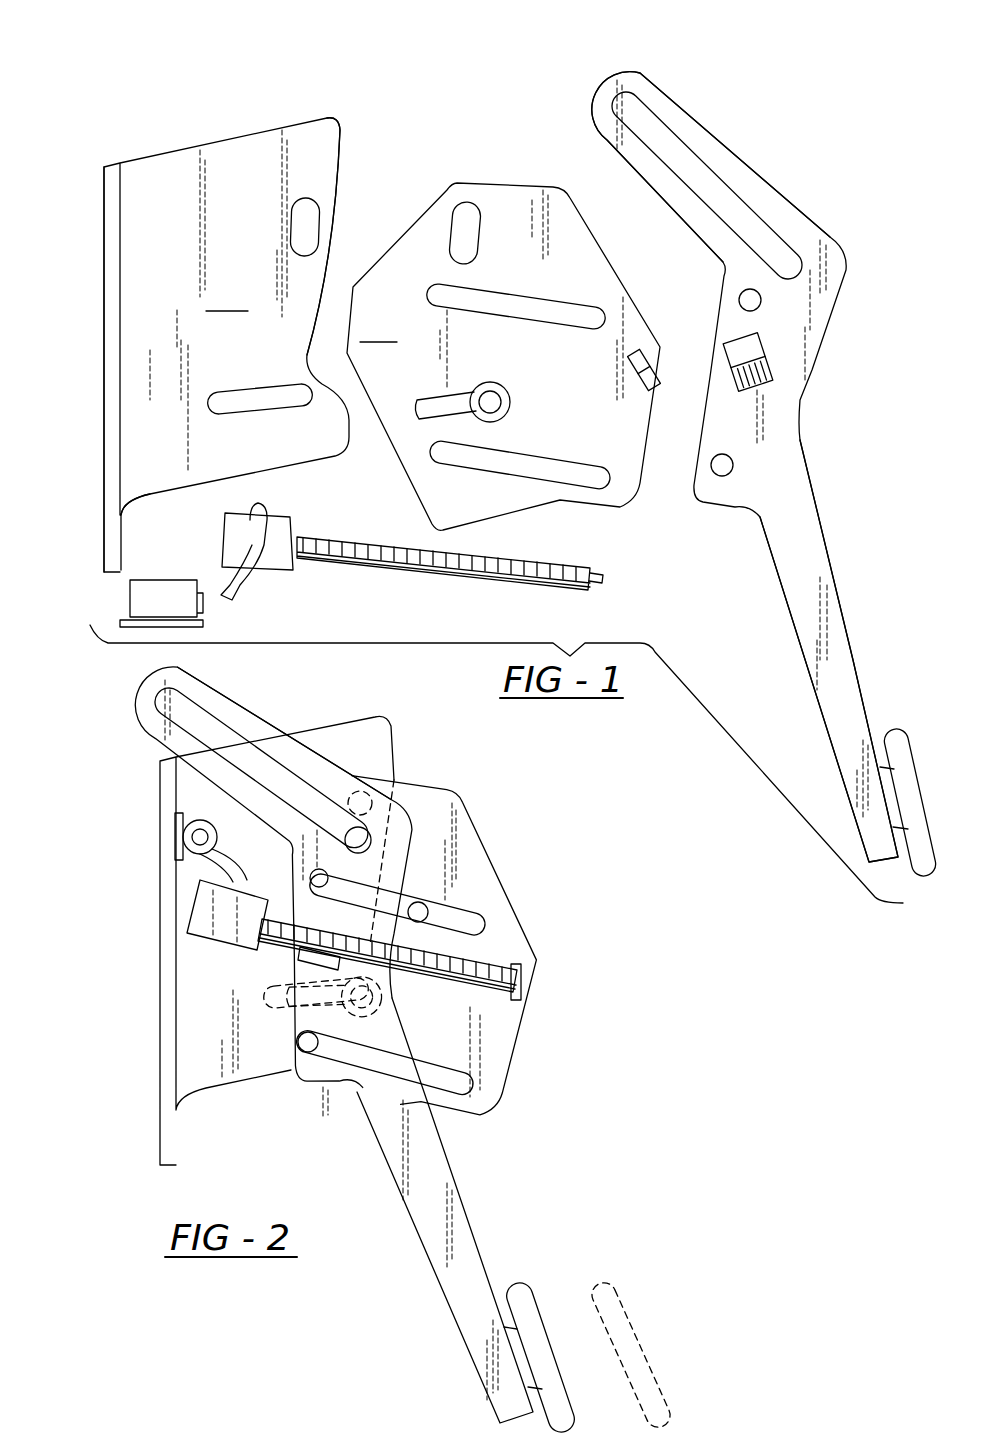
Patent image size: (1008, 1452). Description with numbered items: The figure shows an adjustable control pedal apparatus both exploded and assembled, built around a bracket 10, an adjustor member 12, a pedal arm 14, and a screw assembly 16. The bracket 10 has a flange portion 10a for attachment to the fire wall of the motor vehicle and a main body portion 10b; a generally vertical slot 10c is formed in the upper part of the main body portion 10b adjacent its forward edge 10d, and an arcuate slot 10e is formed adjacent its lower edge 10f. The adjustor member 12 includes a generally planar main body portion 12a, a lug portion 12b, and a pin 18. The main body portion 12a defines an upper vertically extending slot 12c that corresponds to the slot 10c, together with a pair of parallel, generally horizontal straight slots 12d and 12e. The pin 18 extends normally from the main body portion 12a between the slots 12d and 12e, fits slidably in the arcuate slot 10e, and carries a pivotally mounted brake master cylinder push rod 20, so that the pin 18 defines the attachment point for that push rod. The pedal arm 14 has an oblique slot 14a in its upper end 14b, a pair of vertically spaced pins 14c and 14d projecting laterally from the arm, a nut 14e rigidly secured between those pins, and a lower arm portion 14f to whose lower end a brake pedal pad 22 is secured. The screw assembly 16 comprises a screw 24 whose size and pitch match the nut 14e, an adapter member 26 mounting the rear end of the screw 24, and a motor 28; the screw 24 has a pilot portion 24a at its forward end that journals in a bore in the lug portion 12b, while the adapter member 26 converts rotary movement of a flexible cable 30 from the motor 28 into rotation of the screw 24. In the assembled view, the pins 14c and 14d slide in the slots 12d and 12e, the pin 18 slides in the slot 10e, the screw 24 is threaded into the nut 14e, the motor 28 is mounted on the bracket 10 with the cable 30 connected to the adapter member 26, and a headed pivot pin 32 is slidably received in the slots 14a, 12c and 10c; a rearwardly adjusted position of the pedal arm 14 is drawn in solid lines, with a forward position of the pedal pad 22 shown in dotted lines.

In FIG. 1, the bracket 10 is at (263, 316).
In FIG. 2, the bracket 10 is at (356, 708).
In FIG. 1, the flange portion 10a is at (122, 284).
In FIG. 1, the main body portion 10b is at (227, 298).
In FIG. 1, the generally vertical slot 10c is at (293, 200).
In FIG. 1, the forward edge 10d is at (348, 172).
In FIG. 1, the arcuate slot 10e is at (254, 392).
In FIG. 2, the arcuate slot 10e is at (283, 984).
In FIG. 1, the lower edge 10f is at (213, 487).
In FIG. 1, the adjustor member 12 is at (523, 307).
In FIG. 2, the adjustor member 12 is at (370, 922).
In FIG. 1, the main body portion 12a is at (381, 330).
In FIG. 1, the lug portion 12b is at (652, 362).
In FIG. 1, the upper generally vertically extending slot 12c is at (472, 232).
In FIG. 1, the straight slot 12d is at (538, 300).
In FIG. 2, the straight slot 12d is at (397, 904).
In FIG. 1, the straight slot 12e is at (520, 455).
In FIG. 2, the straight slot 12e is at (384, 1063).
In FIG. 1, the pedal arm 14 is at (830, 215).
In FIG. 2, the pedal arm 14 is at (340, 1028).
In FIG. 1, the oblique slot 14a is at (753, 212).
In FIG. 2, the oblique slot 14a is at (261, 768).
In FIG. 1, the upper end 14b is at (695, 112).
In FIG. 2, the upper end 14b is at (284, 733).
In FIG. 1, the pin 14c is at (762, 300).
In FIG. 2, the pin 14c is at (328, 885).
In FIG. 1, the pin 14d is at (712, 474).
In FIG. 2, the pin 14d is at (306, 1054).
In FIG. 1, the nut 14e is at (740, 387).
In FIG. 2, the nut 14e is at (305, 915).
In FIG. 1, the lower arm portion 14f is at (838, 590).
In FIG. 2, the lower arm portion 14f is at (478, 1257).
In FIG. 1, the screw assembly 16 is at (406, 538).
In FIG. 1, the pin 18 is at (512, 395).
In FIG. 2, the pin 18 is at (362, 997).
In FIG. 1, the brake master cylinder push rod 20 is at (438, 400).
In FIG. 2, the brake master cylinder push rod 20 is at (317, 995).
In FIG. 1, the brake pedal pad 22 is at (900, 756).
In FIG. 2, the brake pedal pad 22 is at (535, 1320).
In FIG. 1, the screw 24 is at (527, 563).
In FIG. 2, the screw 24 is at (517, 1000).
In FIG. 1, the pilot portion 24a is at (602, 575).
In FIG. 2, the pilot portion 24a is at (523, 988).
In FIG. 1, the adapter member 26 is at (290, 517).
In FIG. 2, the adapter member 26 is at (190, 903).
In FIG. 1, the motor 28 is at (152, 580).
In FIG. 2, the motor 28 is at (185, 832).
In FIG. 1, the flexible cable 30 is at (225, 600).
In FIG. 2, the flexible cable 30 is at (235, 840).
In FIG. 2, the pivot pin 32 is at (393, 741).